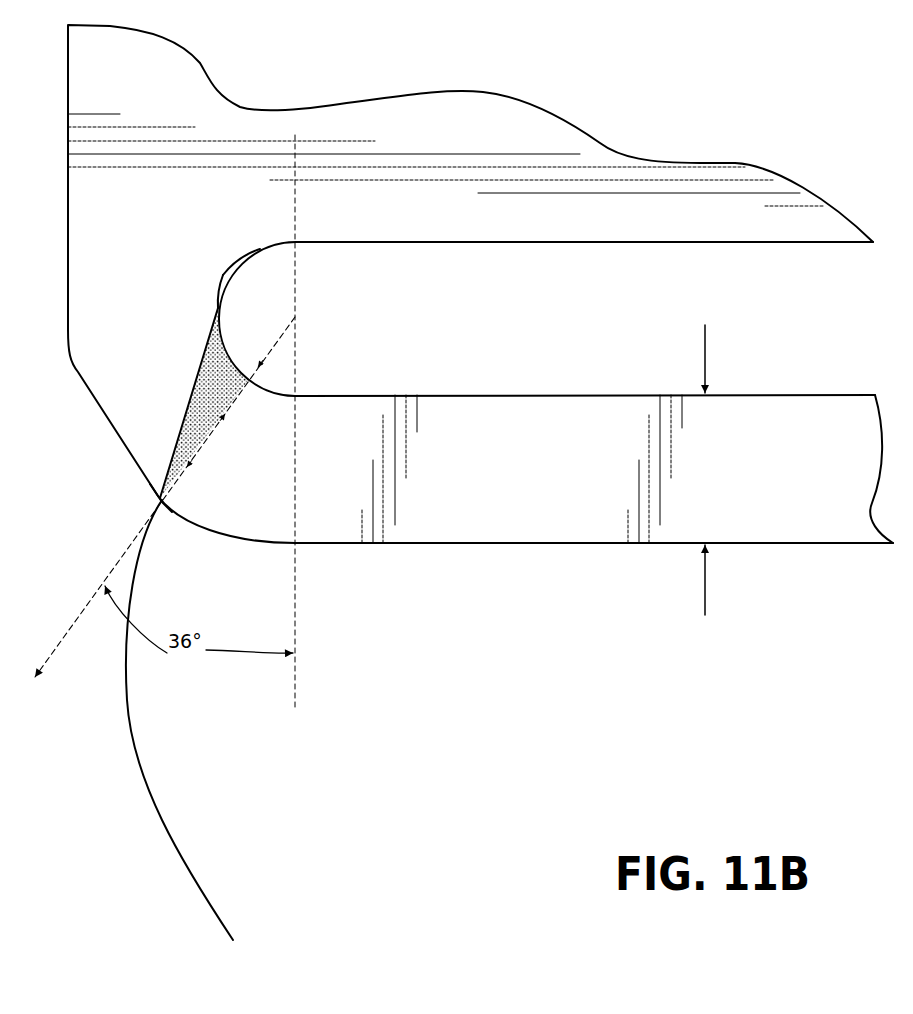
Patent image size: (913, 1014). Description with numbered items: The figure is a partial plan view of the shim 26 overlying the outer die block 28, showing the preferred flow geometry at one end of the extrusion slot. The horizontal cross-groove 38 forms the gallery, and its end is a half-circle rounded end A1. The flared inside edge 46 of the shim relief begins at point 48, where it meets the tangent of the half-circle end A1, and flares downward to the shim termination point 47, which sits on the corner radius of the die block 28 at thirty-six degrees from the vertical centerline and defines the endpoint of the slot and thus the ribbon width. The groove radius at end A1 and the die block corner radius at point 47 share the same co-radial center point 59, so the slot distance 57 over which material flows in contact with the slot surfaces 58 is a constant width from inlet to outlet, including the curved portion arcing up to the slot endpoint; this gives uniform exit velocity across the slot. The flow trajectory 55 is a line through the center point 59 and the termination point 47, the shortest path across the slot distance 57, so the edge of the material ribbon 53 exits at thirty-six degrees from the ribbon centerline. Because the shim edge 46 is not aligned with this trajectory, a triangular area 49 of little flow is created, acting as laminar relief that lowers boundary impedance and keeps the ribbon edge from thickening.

The shim 26 is at (147, 83).
The die block 28 is at (505, 546).
The horizontal cross-groove 38 is at (788, 393).
The flared side edge of shim relief 46 is at (188, 405).
The shim termination point 47 is at (160, 501).
The tangent intersection point 48 is at (221, 295).
The triangular area 49 is at (212, 372).
The material ribbon 53 is at (127, 708).
The flow trajectory 55 is at (212, 442).
The slot distance 57 is at (705, 588).
The slot surfaces / bottom outlet 58 is at (785, 483).
The co-radial center point 59 is at (297, 316).
The rounded end of gallery groove A1 is at (236, 259).